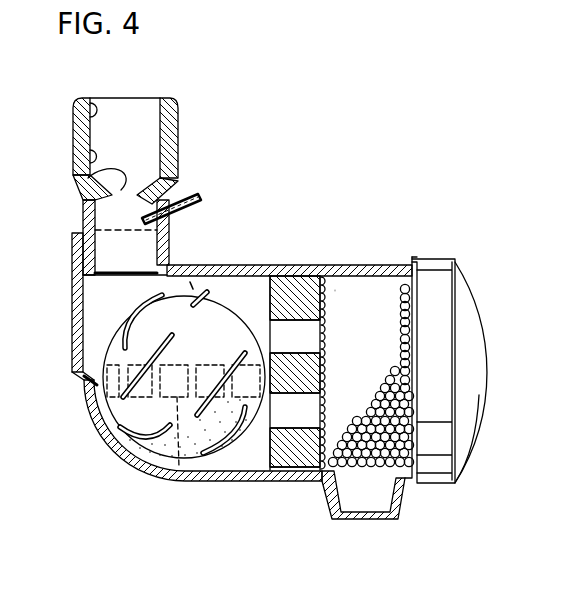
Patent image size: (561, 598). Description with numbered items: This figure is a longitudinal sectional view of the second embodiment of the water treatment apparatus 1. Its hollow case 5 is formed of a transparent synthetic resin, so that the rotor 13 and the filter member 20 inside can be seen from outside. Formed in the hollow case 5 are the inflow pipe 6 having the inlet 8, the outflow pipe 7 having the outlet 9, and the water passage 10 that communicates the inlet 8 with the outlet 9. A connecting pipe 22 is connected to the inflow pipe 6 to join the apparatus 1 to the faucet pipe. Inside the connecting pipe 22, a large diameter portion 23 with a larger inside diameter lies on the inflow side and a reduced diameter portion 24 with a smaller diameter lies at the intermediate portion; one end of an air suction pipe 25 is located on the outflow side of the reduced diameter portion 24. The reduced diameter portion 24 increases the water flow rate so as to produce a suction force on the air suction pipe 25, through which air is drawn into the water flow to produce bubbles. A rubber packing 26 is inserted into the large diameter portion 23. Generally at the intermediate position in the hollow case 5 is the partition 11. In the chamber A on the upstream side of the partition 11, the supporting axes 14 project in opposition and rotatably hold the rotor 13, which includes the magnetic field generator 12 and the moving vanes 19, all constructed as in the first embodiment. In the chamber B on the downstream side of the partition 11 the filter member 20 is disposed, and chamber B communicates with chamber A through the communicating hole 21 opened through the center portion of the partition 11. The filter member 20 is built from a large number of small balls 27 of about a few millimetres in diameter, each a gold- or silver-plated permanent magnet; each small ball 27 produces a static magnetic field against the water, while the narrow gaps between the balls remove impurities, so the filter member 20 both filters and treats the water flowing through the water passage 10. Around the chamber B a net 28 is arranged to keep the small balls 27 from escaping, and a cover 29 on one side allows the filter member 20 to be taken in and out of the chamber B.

The apparatus 1 is at (113, 477).
The hollow case 5 is at (262, 266).
The inflow pipe 6 is at (72, 258).
The outflow pipe 7 is at (403, 505).
The inlet 8 is at (95, 230).
The outlet 9 is at (366, 521).
The water passage 10 is at (88, 300).
The partition 11 is at (268, 452).
The magnetic field generator 12 is at (133, 468).
The rotor 13 is at (195, 276).
The supporting axes 14 is at (90, 380).
The moving vanes 19 is at (150, 441).
The filter member 20 is at (378, 352).
The communicating hole 21 is at (306, 322).
The connecting pipe 22 is at (185, 122).
The large diameter portion 23 is at (77, 143).
The reduced diameter portion 24 is at (92, 176).
The air suction pipe 25 is at (197, 192).
The rubber packing 26 is at (95, 118).
The small balls 27 is at (418, 447).
The net 28 is at (337, 466).
The cover 29 is at (468, 285).
The chamber A is at (177, 471).
The chamber B is at (373, 287).